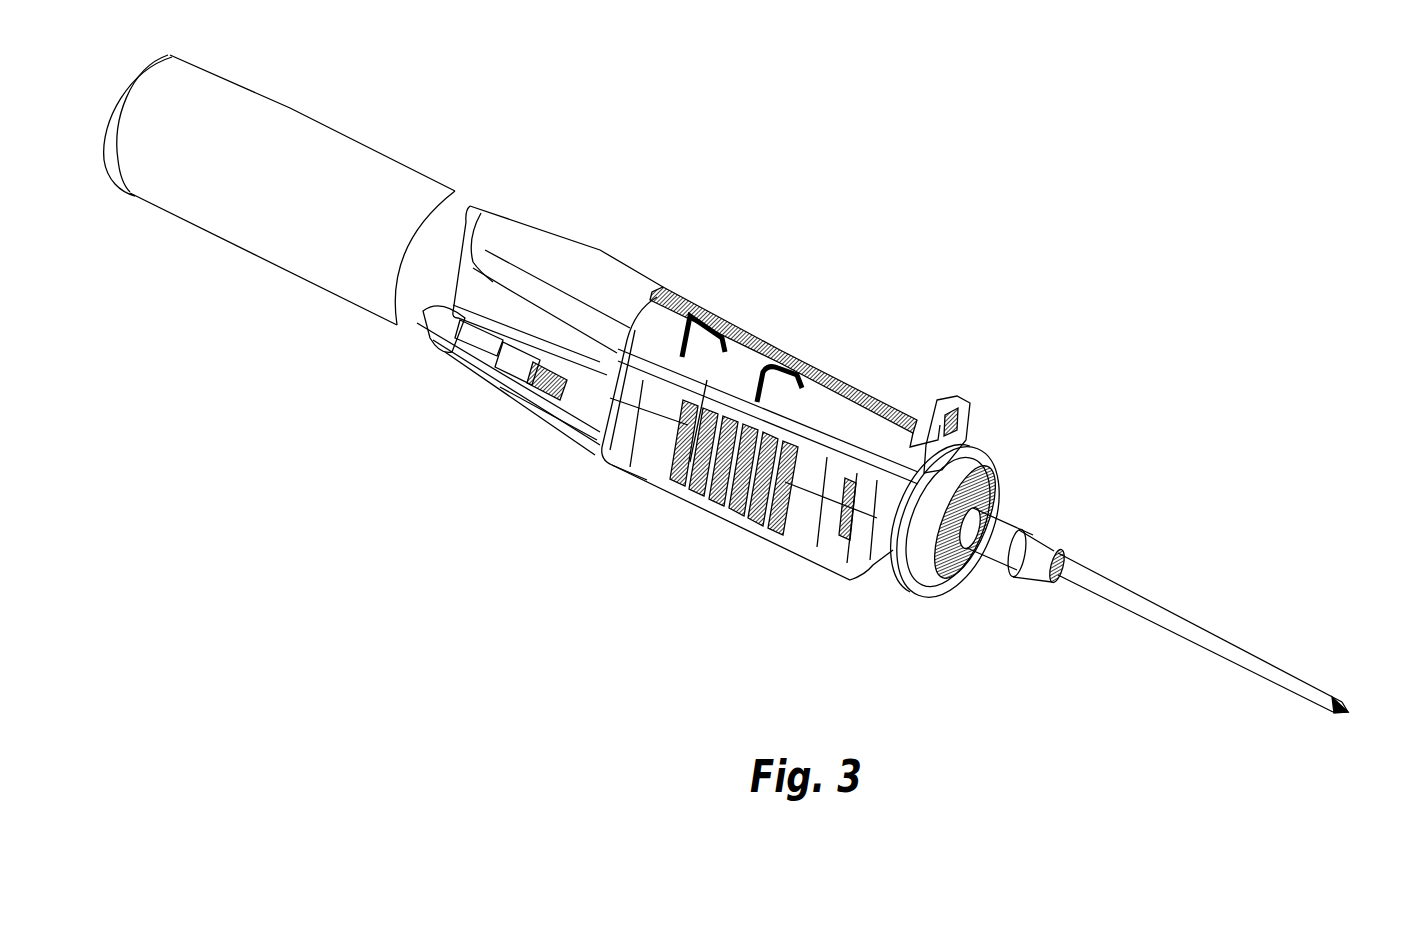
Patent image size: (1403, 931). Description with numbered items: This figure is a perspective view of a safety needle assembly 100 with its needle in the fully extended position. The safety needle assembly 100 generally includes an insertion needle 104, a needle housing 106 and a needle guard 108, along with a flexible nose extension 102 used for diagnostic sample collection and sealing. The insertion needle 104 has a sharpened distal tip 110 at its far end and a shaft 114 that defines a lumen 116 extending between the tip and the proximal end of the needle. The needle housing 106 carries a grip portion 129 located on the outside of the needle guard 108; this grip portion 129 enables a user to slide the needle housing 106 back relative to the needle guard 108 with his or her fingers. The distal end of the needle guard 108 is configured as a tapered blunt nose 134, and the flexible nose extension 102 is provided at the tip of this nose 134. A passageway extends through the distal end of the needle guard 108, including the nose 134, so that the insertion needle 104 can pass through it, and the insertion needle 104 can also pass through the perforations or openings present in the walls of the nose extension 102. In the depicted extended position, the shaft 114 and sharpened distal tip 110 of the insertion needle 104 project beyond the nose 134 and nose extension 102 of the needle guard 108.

The safety needle assembly 100 is at (1068, 67).
The flexible nose extension 102 is at (1047, 551).
The insertion needle 104 is at (1167, 618).
The needle housing 106 is at (800, 535).
The needle guard 108 is at (727, 352).
The sharpened distal tip 110 is at (1330, 708).
The shaft 114 is at (1185, 630).
The lumen 116 is at (1337, 693).
The grip portion 129 is at (700, 500).
The nose 134 is at (1003, 518).